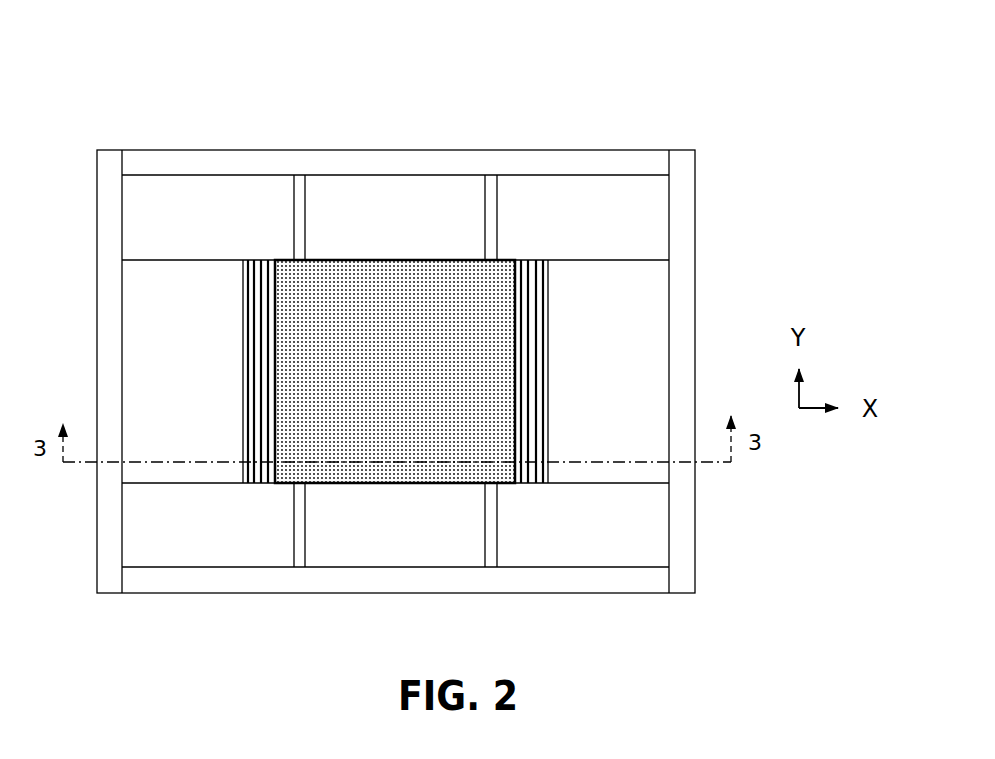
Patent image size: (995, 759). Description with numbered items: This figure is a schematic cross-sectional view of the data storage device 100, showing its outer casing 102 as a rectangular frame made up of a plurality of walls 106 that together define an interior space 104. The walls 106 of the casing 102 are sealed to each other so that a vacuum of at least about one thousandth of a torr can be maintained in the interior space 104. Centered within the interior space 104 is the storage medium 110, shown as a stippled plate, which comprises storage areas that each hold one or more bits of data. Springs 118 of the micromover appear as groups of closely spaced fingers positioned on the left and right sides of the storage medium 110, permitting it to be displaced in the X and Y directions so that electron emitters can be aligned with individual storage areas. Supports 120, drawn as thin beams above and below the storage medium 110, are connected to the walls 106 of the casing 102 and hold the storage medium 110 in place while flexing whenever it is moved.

The data storage device 100 is at (438, 346).
The outer casing 102 is at (409, 368).
The interior space 104 is at (225, 548).
The walls 106 is at (573, 160).
The storage medium 110 is at (378, 383).
The springs 118 is at (234, 404).
The supports 120 is at (305, 213).